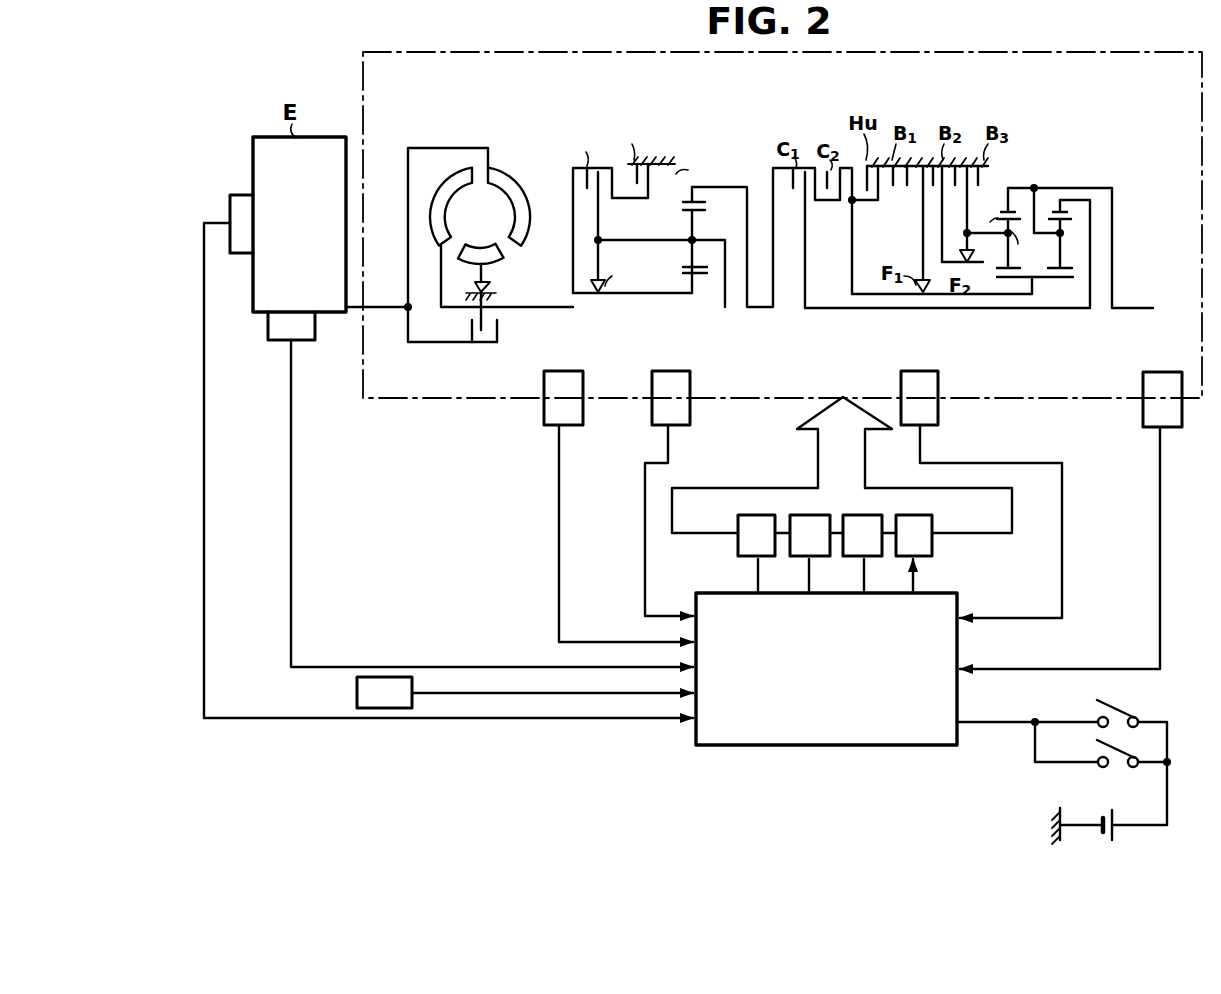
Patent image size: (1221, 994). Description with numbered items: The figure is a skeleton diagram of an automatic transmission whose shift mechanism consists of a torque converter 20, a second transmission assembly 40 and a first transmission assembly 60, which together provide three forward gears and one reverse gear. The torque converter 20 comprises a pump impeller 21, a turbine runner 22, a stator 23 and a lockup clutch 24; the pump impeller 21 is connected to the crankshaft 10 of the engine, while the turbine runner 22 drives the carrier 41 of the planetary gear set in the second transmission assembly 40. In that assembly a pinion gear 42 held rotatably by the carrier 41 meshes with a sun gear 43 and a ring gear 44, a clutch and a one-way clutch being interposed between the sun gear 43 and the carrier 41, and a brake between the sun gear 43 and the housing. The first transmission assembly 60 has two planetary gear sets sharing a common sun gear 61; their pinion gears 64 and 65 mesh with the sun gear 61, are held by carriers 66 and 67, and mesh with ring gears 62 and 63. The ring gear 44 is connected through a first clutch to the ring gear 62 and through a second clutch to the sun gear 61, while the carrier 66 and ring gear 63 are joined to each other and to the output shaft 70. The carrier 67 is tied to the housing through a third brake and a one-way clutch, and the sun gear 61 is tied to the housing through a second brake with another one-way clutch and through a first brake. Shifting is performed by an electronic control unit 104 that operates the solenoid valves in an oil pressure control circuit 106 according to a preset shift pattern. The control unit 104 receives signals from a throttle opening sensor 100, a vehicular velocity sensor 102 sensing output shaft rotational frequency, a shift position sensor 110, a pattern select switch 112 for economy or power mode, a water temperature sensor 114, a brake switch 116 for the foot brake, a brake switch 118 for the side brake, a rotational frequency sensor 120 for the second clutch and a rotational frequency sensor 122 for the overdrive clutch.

The crankshaft 10 is at (385, 309).
The torque converter 20 is at (450, 136).
The pump impeller 21 is at (507, 172).
The turbine runner 22 is at (446, 189).
The stator 23 is at (500, 254).
The lockup clutch 24 is at (447, 343).
The second transmission assembly 40 is at (669, 133).
The carrier 41 is at (712, 242).
The pinion gear 42 is at (682, 226).
The sun gear 43 is at (686, 276).
The ring gear 44 is at (706, 184).
The first transmission assembly 60 is at (1088, 140).
The sun gear 61 is at (1052, 280).
The ring gear 62 is at (1057, 210).
The ring gear 63 is at (1003, 208).
The pinion gear 64 is at (1066, 222).
The pinion gear 65 is at (1028, 246).
The carrier 66 is at (1046, 235).
The carrier 67 is at (986, 236).
The output shaft 70 is at (1122, 310).
The throttle opening sensor 100 is at (281, 332).
The vehicular velocity sensor 102 is at (1158, 376).
The electronic control unit 104 is at (816, 748).
The oil pressure control circuit 106 is at (983, 535).
The shift position sensor 110 is at (563, 373).
The pattern select switch 112 is at (356, 692).
The water temperature sensor 114 is at (228, 195).
The brake switch 116 is at (1122, 712).
The brake switch 118 is at (1118, 768).
The rotational frequency sensor 120 is at (918, 373).
The rotational frequency sensor 122 is at (671, 373).